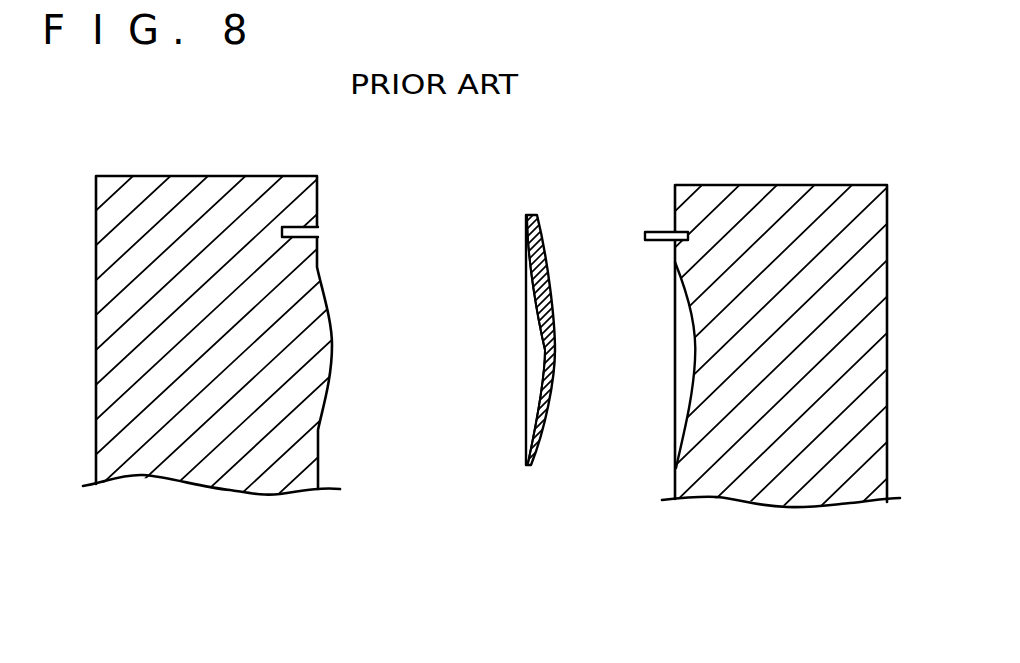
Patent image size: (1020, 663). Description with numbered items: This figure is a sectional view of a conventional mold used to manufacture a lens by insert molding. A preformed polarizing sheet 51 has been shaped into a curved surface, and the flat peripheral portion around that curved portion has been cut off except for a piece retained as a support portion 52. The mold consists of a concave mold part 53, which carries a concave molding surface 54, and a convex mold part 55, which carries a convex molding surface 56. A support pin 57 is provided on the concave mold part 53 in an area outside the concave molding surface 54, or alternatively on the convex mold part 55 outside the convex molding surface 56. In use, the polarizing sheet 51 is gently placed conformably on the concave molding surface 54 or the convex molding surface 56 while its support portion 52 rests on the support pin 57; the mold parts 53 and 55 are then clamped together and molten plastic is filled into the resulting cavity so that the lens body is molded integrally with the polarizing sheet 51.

The polarizing sheet 51 is at (559, 329).
The support portion 52 is at (538, 228).
The concave mold part 53 is at (800, 472).
The concave molding surface 54 is at (690, 410).
The convex mold part 55 is at (157, 450).
The convex molding surface 56 is at (333, 370).
The support pin 57 is at (660, 232).